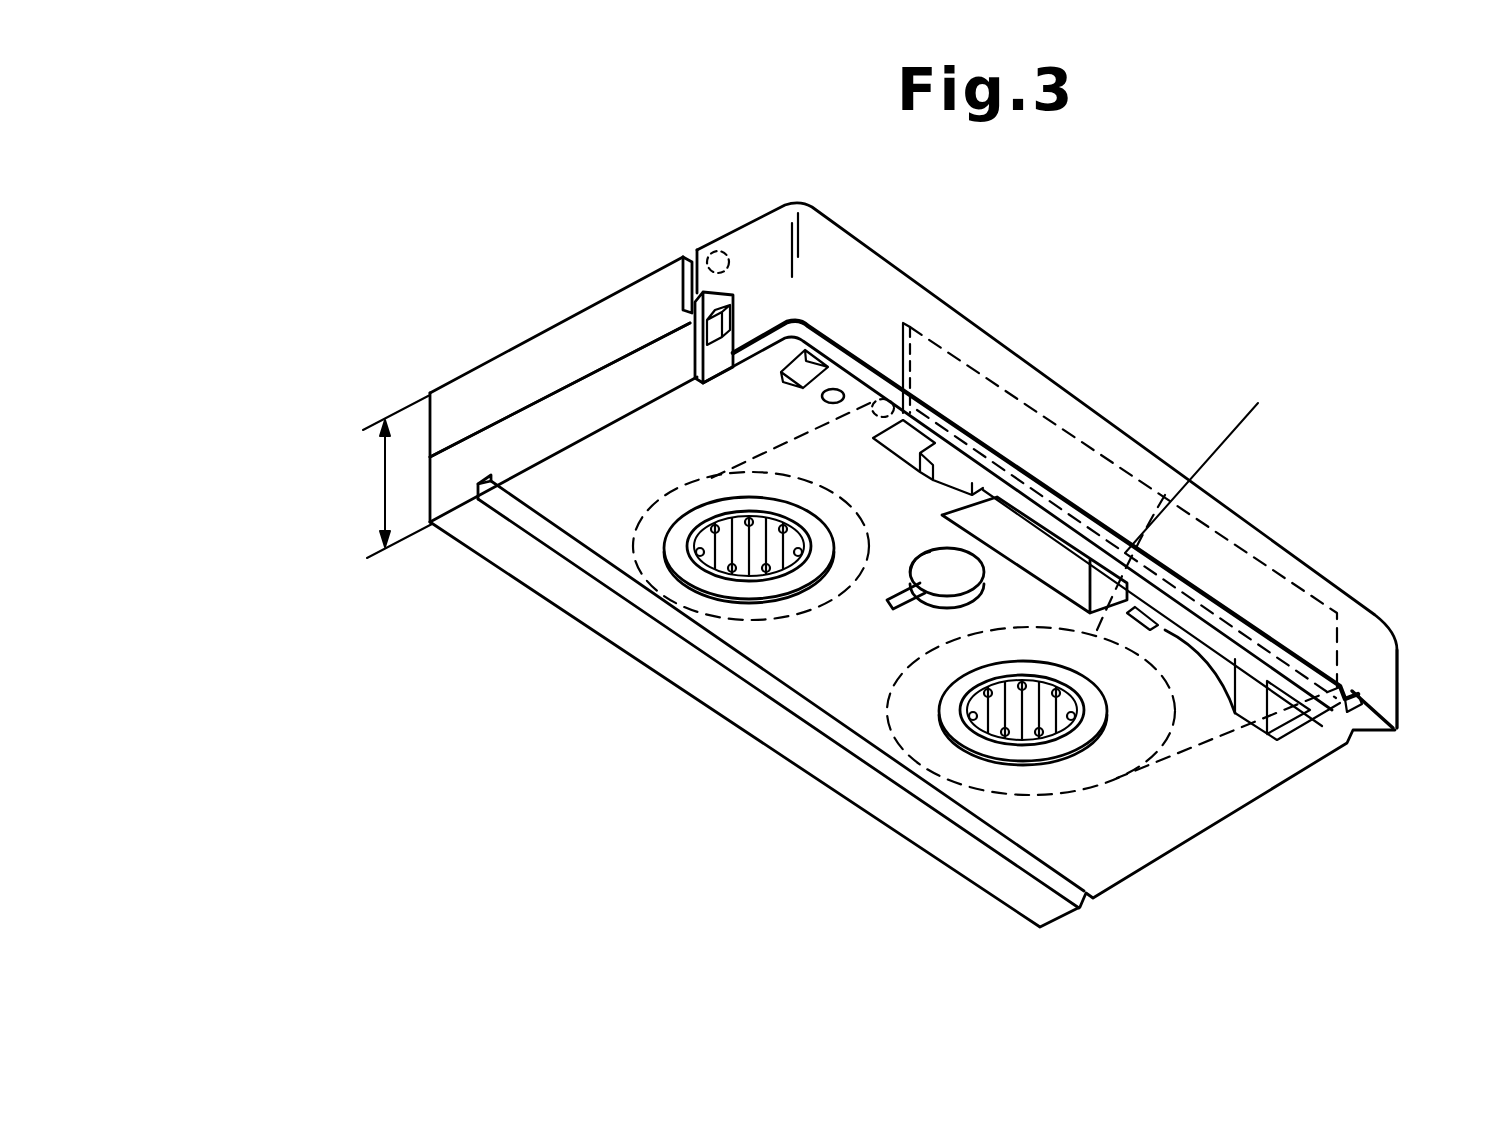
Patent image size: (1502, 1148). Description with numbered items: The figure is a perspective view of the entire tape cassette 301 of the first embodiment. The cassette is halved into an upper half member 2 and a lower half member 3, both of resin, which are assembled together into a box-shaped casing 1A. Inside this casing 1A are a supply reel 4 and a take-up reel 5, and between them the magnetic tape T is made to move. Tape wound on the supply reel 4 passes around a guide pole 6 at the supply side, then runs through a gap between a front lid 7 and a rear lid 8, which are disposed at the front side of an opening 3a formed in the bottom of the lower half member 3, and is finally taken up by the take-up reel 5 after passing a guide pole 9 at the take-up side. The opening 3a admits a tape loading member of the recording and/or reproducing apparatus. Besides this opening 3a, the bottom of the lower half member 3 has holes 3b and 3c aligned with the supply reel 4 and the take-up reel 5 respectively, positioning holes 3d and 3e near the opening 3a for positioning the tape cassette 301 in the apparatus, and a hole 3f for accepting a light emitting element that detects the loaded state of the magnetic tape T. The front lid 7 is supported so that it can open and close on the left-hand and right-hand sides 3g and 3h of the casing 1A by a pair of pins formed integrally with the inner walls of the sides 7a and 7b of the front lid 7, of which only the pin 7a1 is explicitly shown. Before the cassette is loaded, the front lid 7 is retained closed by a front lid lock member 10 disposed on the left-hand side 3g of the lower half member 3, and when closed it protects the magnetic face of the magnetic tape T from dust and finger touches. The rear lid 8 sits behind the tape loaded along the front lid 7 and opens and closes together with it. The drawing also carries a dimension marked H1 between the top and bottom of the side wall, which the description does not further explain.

The tape cassette 301 is at (488, 143).
The casing 1A is at (226, 344).
The upper half member 2 is at (463, 388).
The lower half member 3 is at (450, 492).
The opening 3a is at (1040, 550).
The hole 3b is at (1004, 764).
The hole 3c is at (882, 588).
The positioning hole 3d is at (1153, 628).
The positioning hole 3e is at (840, 387).
The hole 3f is at (782, 590).
The left-hand side 3g is at (543, 420).
The right-hand side 3h is at (1333, 770).
The supply reel 4 is at (1067, 722).
The take-up reel 5 is at (690, 560).
The guide pole 6 is at (1373, 710).
The front lid 7 is at (1067, 410).
The right-hand side of front lid 7a is at (748, 240).
The pin 7a1 is at (700, 247).
The left-hand side of front lid 7b is at (1400, 683).
The rear lid 8 is at (1008, 356).
The guide pole 9 is at (877, 395).
The front lid lock member 10 is at (713, 327).
The magnetic tape T is at (1202, 464).
The wall height H1 is at (389, 476).